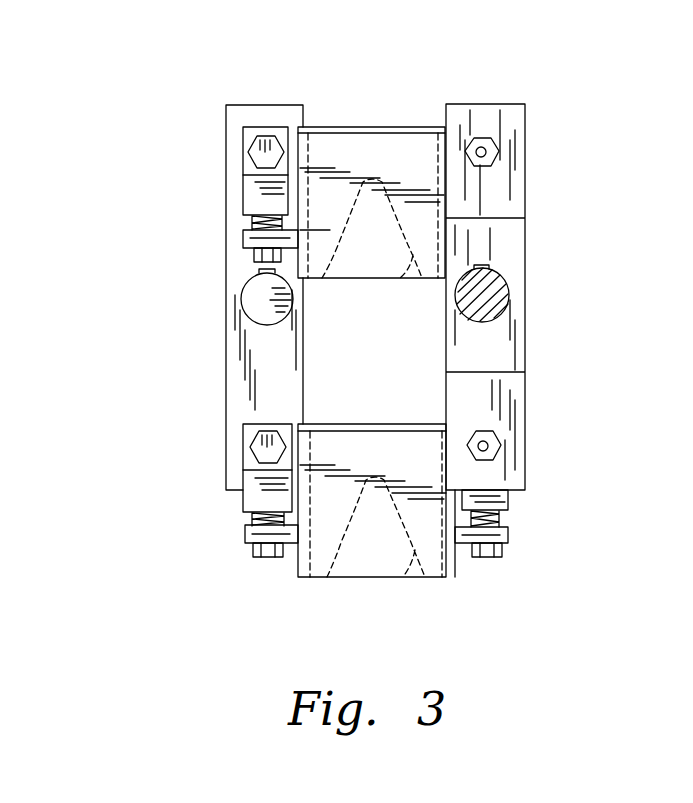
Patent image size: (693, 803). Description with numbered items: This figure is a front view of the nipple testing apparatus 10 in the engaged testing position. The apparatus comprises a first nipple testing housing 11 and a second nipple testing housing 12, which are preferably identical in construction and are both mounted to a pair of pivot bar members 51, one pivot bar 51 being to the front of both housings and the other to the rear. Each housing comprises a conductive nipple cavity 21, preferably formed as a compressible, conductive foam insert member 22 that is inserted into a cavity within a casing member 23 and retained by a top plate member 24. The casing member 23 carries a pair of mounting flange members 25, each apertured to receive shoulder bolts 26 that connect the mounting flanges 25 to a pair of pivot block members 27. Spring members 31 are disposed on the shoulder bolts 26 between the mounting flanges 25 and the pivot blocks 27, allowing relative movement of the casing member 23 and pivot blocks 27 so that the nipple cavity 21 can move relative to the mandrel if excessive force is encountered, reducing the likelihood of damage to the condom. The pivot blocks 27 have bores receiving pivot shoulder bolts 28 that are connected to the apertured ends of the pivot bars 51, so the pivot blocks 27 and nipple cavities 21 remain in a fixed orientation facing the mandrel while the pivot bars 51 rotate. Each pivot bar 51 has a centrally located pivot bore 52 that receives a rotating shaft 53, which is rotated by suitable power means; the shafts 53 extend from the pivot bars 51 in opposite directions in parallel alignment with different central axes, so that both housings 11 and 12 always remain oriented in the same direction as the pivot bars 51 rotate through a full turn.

The nipple testing apparatus 10 is at (190, 335).
The first nipple testing housing 11 is at (458, 582).
The second nipple testing housing 12 is at (428, 105).
The conductive nipple cavity 21 is at (413, 255).
The compressible, conductive foam insert member 22 is at (308, 152).
The casing member 23 is at (243, 238).
The top plate member 24 is at (383, 127).
The mounting flange members 25 is at (235, 537).
The shoulder bolts 26 is at (248, 262).
The pivot block members 27 is at (243, 167).
The pivot shoulder bolts 28 is at (268, 140).
The spring members 31 is at (250, 220).
The pivot bar members 51 is at (228, 382).
The pivot bore 52 is at (250, 322).
The rotating shaft 53 is at (268, 295).